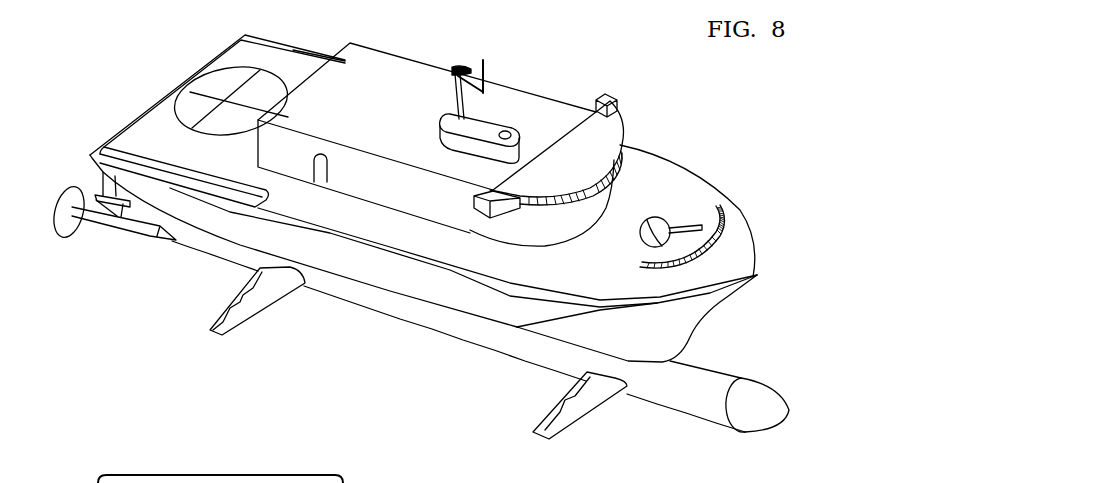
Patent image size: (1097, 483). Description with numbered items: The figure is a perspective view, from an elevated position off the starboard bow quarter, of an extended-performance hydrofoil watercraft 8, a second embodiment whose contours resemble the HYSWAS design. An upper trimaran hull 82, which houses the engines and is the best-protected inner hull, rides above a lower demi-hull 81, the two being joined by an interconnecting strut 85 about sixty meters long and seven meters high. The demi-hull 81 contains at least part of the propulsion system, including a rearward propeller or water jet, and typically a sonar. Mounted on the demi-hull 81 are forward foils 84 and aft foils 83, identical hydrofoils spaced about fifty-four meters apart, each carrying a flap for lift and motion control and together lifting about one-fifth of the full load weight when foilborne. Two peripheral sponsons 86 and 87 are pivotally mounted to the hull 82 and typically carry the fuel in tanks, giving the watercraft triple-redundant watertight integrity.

The extended-performance hydrofoil watercraft (E-P HFWC) 8 is at (549, 88).
The demi-hull 81 is at (455, 334).
The upper trimaran hull 82 is at (634, 200).
The aft foils 83 is at (212, 322).
The forward foils 84 is at (585, 417).
The interconnecting strut 85 is at (683, 336).
The peripheral sponson 86 is at (341, 275).
The peripheral sponson 87 is at (633, 143).